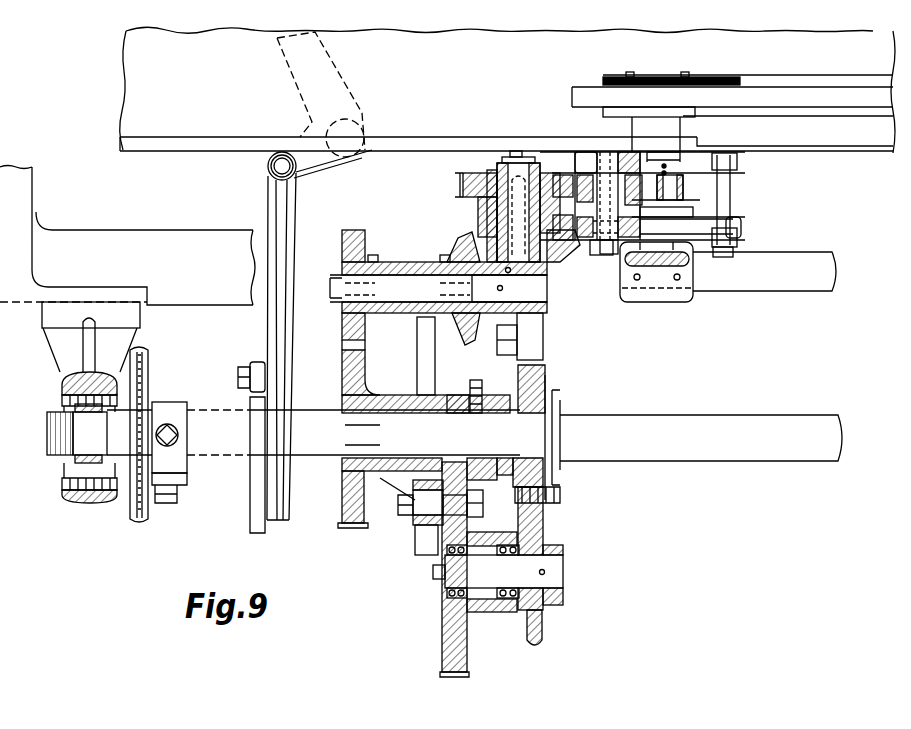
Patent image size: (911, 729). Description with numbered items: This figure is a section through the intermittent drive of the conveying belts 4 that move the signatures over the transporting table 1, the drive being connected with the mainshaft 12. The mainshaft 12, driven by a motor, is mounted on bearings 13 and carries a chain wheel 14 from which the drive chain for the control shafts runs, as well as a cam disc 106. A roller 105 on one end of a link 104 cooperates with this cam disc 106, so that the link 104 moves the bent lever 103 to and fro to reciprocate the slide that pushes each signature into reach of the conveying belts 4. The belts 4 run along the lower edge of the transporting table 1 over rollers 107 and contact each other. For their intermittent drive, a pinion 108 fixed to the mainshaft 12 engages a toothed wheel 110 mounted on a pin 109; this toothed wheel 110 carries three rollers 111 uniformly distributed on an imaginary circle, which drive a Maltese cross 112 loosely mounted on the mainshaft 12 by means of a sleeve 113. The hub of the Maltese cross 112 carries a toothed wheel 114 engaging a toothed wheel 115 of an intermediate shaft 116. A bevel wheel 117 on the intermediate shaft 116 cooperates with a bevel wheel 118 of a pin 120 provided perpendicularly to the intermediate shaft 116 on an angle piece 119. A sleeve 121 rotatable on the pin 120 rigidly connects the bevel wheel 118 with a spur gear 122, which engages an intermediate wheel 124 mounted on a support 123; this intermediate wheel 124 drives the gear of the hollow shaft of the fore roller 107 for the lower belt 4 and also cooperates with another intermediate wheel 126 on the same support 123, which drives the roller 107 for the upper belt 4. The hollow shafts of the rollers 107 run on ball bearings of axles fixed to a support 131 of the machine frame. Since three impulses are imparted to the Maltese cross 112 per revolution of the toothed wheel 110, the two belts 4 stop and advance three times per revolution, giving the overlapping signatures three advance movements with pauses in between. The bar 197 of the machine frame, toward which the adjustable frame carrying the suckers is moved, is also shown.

The transporting table 1 is at (128, 73).
The bar 197 is at (191, 147).
The conveying belts 4 is at (802, 93).
The rollers 107 is at (720, 86).
The bent lever 103 is at (334, 70).
The link 104 is at (297, 206).
The roller 105 is at (252, 364).
The cam disc 106 is at (250, 530).
The bearings 13 is at (88, 500).
The chain wheel 14 is at (142, 528).
The sleeve 113 is at (412, 413).
The mainshaft 12 is at (660, 416).
The intermediate shaft 116 is at (402, 278).
The toothed wheel 115 is at (362, 232).
The toothed wheel 114 is at (342, 362).
The Maltese cross 112 is at (423, 328).
The pinion 108 is at (450, 402).
The bevel wheel 117 is at (448, 250).
The angle piece 119 is at (557, 308).
The pin 120 is at (515, 160).
The sleeve 121 is at (492, 175).
The spur gear 122 is at (460, 181).
The bevel wheel 118 is at (566, 242).
The intermediate wheel 124 is at (636, 170).
The intermediate wheel 126 is at (690, 190).
The support 123 is at (742, 226).
The support 131 is at (660, 268).
The rollers 111 is at (415, 538).
The pin 109 is at (452, 576).
The toothed wheel 110 is at (442, 632).